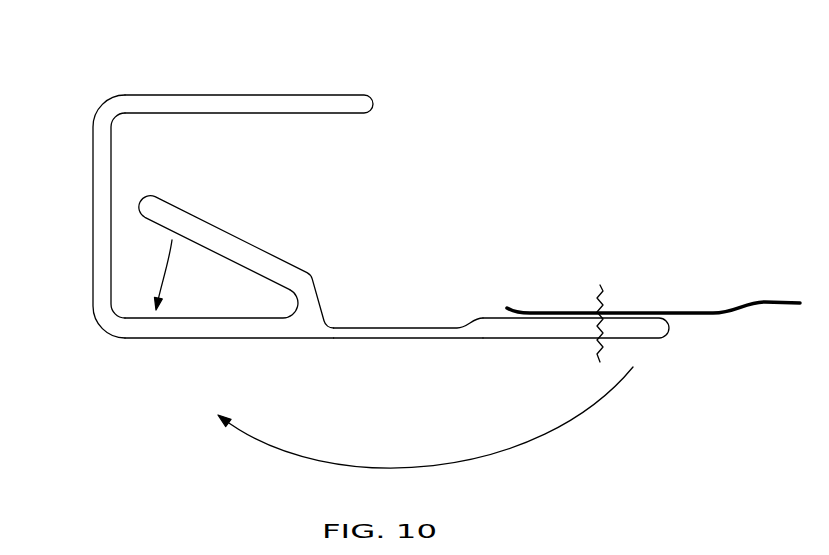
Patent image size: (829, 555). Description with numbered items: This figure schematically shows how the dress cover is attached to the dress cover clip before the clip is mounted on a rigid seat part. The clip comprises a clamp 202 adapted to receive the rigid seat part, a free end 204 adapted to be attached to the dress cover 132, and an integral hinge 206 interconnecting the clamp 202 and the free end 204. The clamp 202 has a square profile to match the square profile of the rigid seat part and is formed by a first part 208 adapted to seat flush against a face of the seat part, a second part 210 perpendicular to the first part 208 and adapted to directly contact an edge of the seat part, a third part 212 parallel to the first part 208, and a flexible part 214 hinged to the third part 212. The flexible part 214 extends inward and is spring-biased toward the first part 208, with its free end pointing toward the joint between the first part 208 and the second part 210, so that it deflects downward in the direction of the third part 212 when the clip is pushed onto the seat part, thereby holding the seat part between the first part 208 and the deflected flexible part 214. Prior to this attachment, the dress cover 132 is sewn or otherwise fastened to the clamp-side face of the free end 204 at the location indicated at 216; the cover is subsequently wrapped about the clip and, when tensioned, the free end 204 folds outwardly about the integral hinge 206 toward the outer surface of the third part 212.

The clamp 202 is at (401, 237).
The free end 204 is at (668, 328).
The integral hinge 206 is at (434, 335).
The first part 208 is at (195, 105).
The second part 210 is at (102, 222).
The third part 212 is at (262, 332).
The flexible part 214 is at (238, 252).
The attachment location 216 is at (603, 289).
The dress cover 132 is at (768, 300).